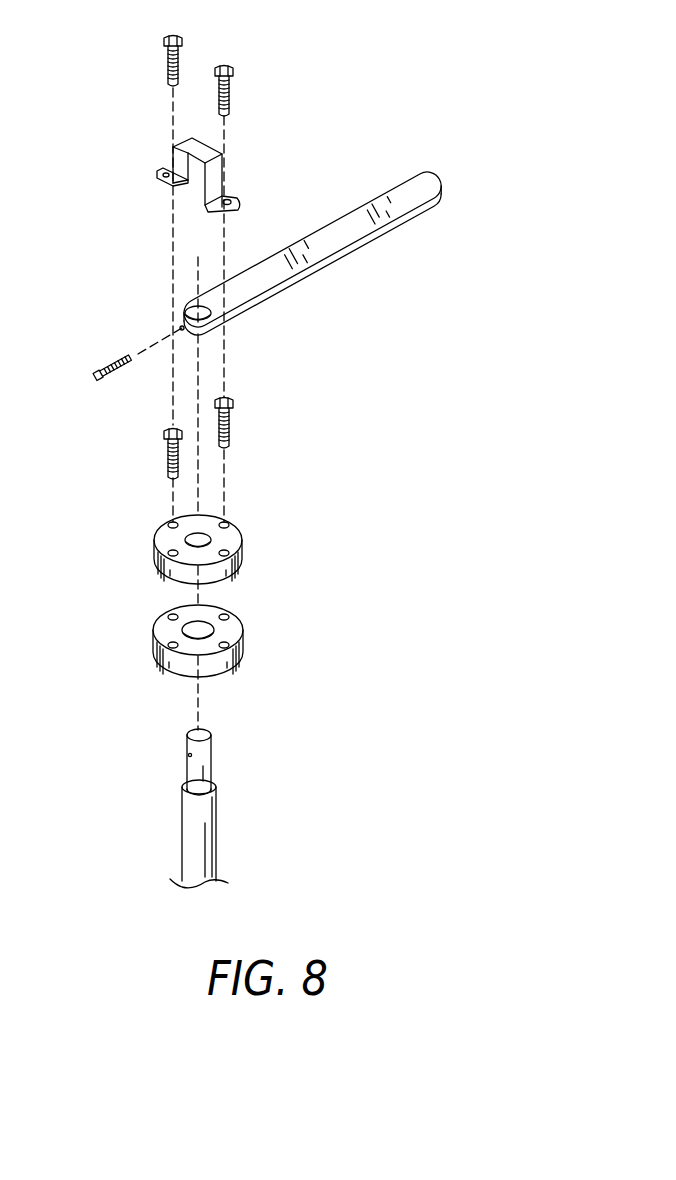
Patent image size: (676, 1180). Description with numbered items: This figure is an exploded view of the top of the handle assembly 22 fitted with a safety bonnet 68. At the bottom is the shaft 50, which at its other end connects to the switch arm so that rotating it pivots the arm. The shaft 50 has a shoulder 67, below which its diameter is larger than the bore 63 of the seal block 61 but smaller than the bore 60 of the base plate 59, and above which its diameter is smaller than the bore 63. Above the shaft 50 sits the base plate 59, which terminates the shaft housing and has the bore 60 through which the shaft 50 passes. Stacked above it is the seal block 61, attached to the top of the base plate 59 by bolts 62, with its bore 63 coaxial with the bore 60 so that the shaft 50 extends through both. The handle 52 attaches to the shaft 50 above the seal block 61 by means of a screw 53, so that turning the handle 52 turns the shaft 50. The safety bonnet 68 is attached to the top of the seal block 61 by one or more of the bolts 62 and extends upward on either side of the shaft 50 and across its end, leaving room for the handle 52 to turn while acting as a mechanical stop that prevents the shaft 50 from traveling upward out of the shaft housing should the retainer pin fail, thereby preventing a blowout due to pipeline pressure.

The handle assembly 22 is at (467, 500).
The shaft 50 is at (213, 817).
The handle 52 is at (418, 185).
The screw 53 is at (113, 362).
The base plate 59 is at (189, 618).
The bore 60 is at (205, 623).
The seal block 61 is at (245, 518).
The bolts 62 is at (167, 63).
The bore 63 is at (202, 533).
The shoulder 67 is at (187, 783).
The safety bonnet 68 is at (222, 180).